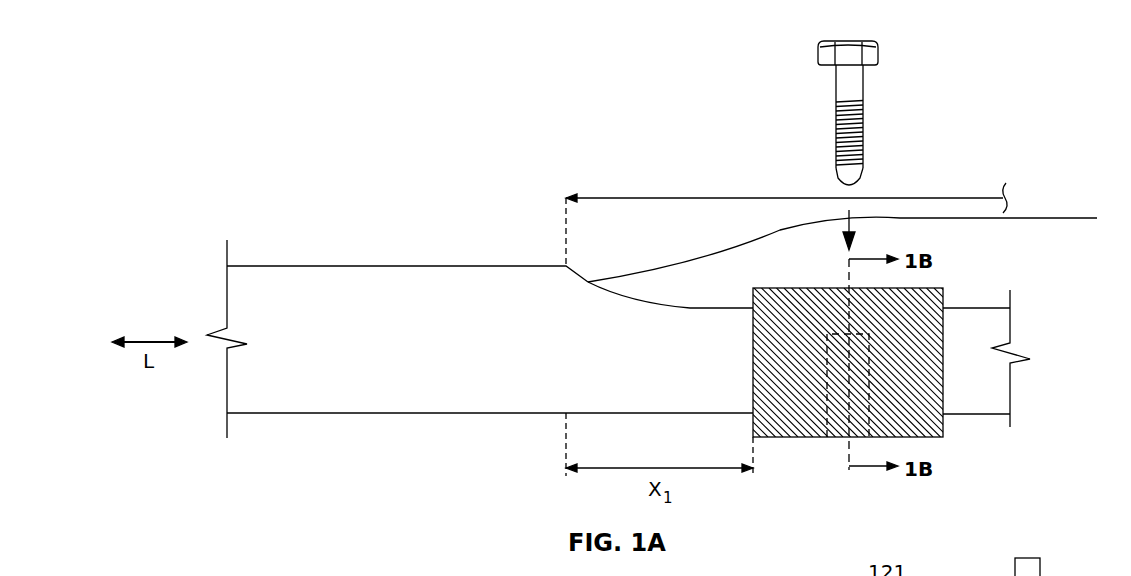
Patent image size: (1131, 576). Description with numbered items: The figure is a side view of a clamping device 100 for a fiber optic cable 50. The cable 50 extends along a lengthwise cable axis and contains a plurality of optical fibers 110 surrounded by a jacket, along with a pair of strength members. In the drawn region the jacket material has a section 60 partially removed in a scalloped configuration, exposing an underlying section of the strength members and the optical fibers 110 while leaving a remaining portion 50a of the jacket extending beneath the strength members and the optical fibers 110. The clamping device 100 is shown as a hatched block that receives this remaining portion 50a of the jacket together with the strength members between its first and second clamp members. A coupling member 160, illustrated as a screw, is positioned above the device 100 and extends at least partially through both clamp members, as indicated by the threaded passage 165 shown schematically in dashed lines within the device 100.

The fiber optic cable 50 is at (355, 414).
The remaining portion of the jacket 50a is at (727, 307).
The section of jacket material partially removed 60 is at (763, 197).
The clamping device 100 is at (812, 460).
The optical fibers 110 is at (943, 213).
The coupling member 160 is at (878, 52).
The threaded passage 165 is at (877, 390).